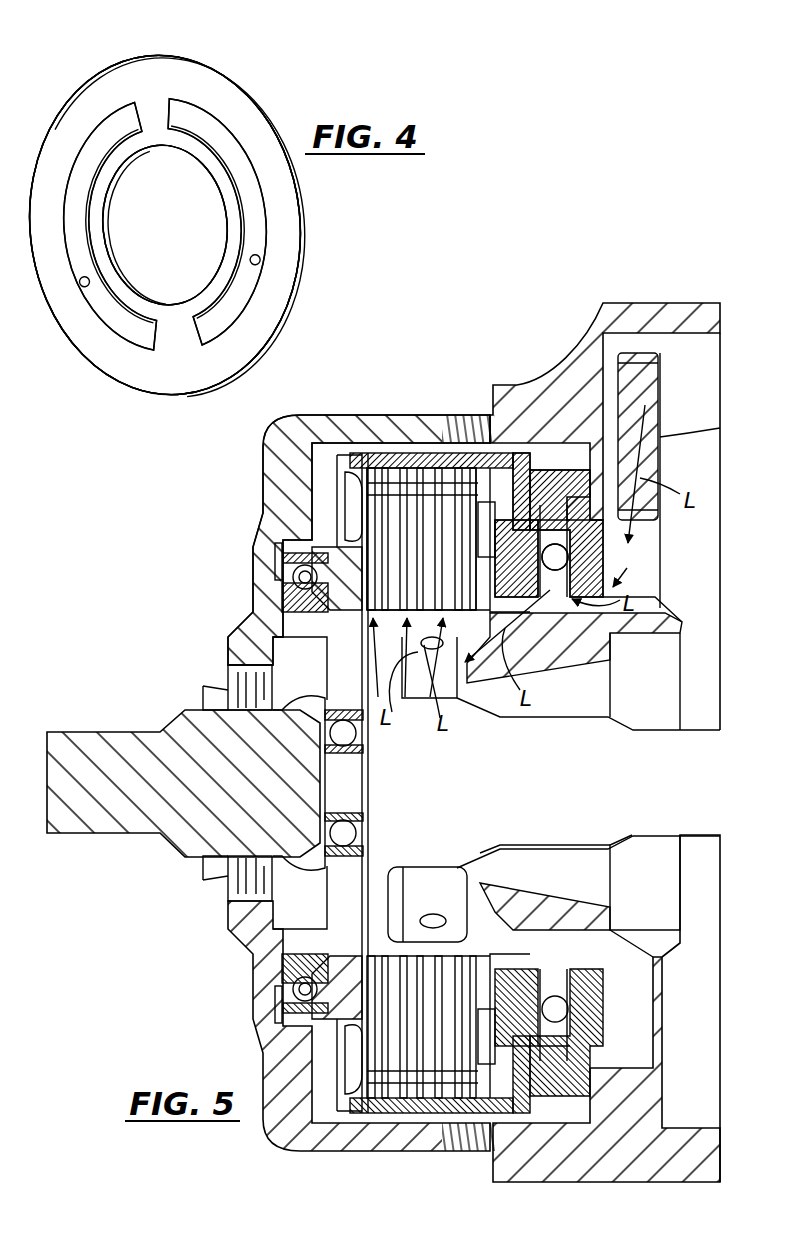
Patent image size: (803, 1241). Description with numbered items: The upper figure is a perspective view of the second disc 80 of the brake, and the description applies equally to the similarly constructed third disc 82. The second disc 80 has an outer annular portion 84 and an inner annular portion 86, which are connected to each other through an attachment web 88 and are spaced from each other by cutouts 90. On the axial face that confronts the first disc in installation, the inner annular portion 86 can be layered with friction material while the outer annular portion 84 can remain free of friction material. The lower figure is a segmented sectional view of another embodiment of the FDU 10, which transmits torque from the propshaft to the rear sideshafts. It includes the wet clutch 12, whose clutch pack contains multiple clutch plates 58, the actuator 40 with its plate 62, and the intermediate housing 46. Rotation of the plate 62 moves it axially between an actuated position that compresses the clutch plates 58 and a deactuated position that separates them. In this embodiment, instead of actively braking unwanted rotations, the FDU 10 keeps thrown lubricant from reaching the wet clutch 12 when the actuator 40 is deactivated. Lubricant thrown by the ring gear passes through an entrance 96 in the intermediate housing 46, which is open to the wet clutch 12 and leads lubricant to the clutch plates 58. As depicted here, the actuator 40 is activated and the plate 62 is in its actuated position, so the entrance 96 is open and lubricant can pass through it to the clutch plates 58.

In FIG. 5, the FDU 10 is at (742, 388).
In FIG. 5, the wet clutch 12 is at (397, 456).
In FIG. 5, the actuator 40 is at (556, 478).
In FIG. 5, the intermediate housing 46 is at (592, 642).
In FIG. 5, the clutch plates 58 is at (442, 478).
In FIG. 5, the plate 62 is at (535, 488).
In FIG. 4, the second disc 80 is at (163, 56).
In FIG. 4, the third disc 82 is at (163, 56).
In FIG. 4, the outer annular portion 84 is at (272, 218).
In FIG. 4, the inner annular portion 86 is at (221, 205).
In FIG. 4, the attachment web 88 is at (145, 107).
In FIG. 4, the cutouts 90 is at (86, 274).
In FIG. 5, the entrance 96 is at (550, 592).